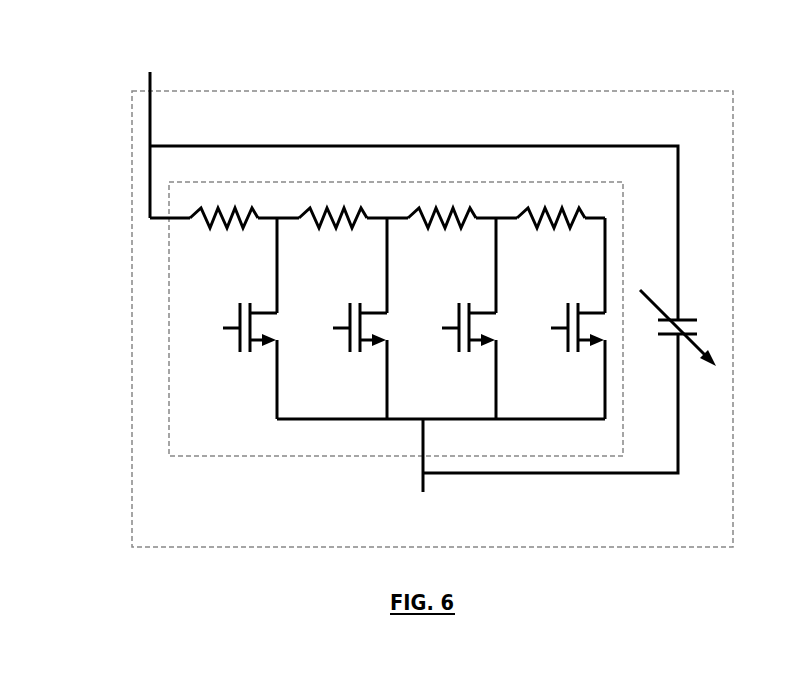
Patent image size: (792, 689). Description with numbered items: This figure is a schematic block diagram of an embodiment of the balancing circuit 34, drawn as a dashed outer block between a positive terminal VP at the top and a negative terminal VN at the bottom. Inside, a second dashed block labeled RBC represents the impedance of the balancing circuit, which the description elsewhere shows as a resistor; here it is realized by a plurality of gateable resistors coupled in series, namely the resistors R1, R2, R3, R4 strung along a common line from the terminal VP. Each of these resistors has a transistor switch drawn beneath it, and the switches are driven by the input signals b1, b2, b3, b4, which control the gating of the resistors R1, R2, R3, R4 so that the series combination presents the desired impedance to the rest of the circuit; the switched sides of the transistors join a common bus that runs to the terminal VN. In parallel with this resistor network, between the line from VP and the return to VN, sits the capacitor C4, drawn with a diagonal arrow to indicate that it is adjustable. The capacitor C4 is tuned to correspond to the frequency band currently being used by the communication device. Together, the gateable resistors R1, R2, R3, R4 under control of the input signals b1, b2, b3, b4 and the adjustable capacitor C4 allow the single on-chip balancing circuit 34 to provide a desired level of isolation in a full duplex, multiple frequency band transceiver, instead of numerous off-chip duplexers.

The balancing circuit 34 is at (518, 123).
The balancing circuit impedance resistor RBC is at (396, 319).
The gateable resistor R1 is at (224, 234).
The gateable resistor R2 is at (333, 234).
The gateable resistor R3 is at (442, 234).
The gateable resistor R4 is at (551, 234).
The input signal b1 is at (236, 318).
The input signal b2 is at (346, 318).
The input signal b3 is at (455, 318).
The input signal b4 is at (564, 318).
The capacitor C4 is at (679, 322).
The positive voltage terminal VP is at (149, 129).
The negative voltage terminal VN is at (423, 471).